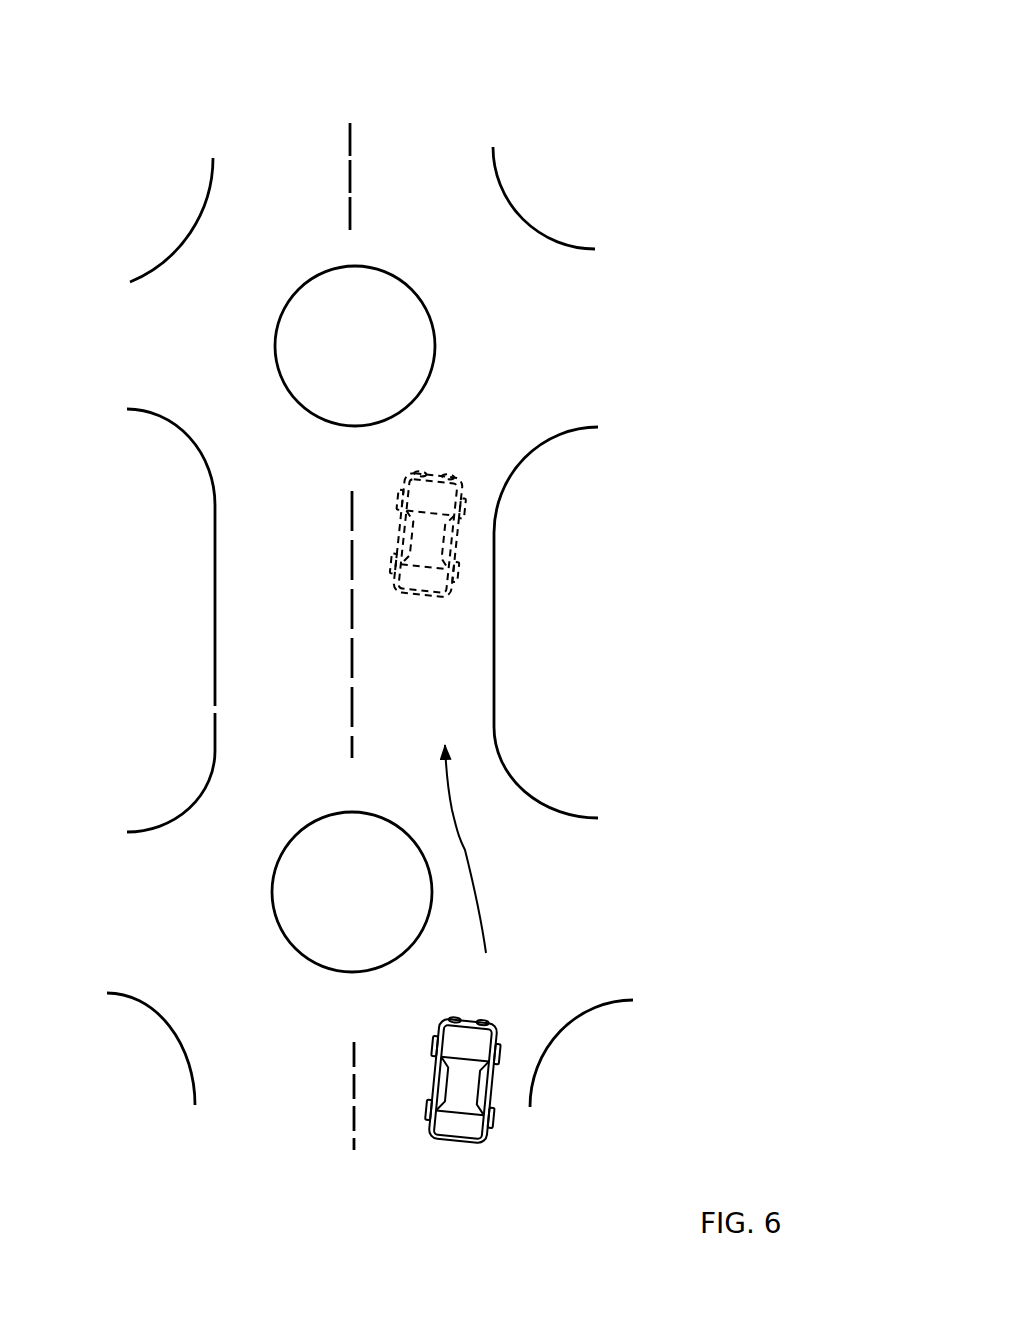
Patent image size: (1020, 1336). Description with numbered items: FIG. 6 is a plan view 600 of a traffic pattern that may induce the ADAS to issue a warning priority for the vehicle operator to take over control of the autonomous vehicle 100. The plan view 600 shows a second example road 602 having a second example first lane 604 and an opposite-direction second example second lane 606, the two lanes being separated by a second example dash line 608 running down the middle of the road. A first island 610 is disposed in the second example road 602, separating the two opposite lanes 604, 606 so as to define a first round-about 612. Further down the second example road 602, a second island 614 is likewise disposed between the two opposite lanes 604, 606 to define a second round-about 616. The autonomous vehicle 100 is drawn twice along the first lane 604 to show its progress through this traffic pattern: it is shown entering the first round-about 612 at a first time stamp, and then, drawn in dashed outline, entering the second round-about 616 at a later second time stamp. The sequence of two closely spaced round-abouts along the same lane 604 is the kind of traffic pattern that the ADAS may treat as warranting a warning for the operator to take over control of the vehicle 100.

The autonomous vehicle 100 is at (460, 1087).
The plan view 600 is at (647, 169).
The second example road 602 is at (290, 116).
The second example first lane 604 is at (443, 166).
The second example second lane 606 is at (262, 221).
The second example dash line 608 is at (353, 197).
The first island 610 is at (342, 908).
The first round-about 612 is at (516, 901).
The second island 614 is at (352, 358).
The second round-about 616 is at (530, 348).